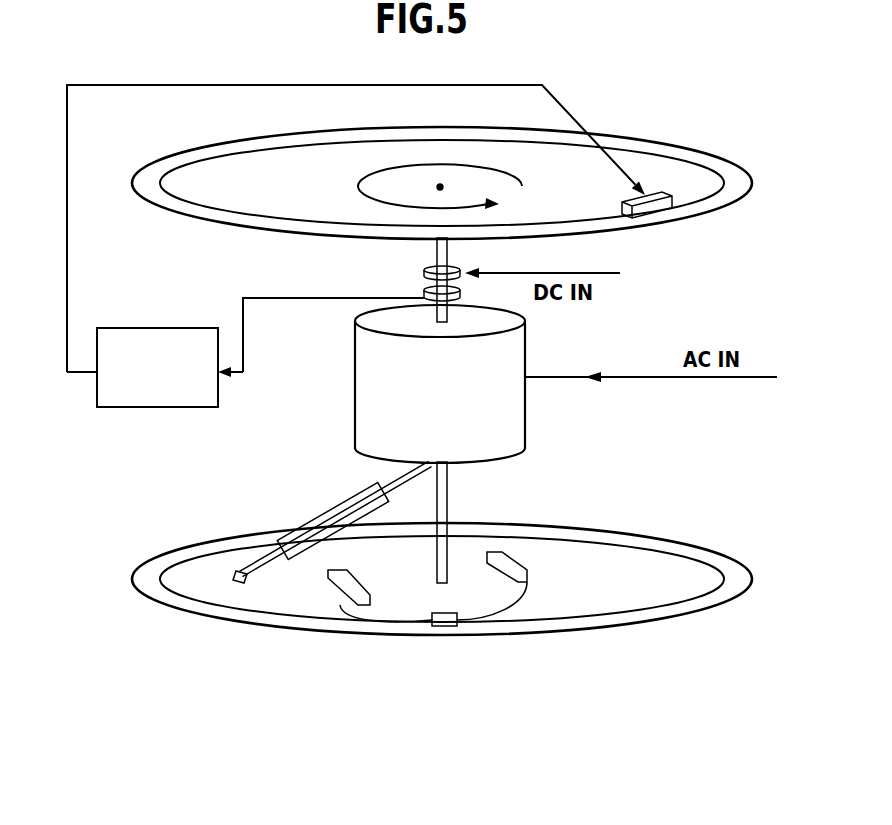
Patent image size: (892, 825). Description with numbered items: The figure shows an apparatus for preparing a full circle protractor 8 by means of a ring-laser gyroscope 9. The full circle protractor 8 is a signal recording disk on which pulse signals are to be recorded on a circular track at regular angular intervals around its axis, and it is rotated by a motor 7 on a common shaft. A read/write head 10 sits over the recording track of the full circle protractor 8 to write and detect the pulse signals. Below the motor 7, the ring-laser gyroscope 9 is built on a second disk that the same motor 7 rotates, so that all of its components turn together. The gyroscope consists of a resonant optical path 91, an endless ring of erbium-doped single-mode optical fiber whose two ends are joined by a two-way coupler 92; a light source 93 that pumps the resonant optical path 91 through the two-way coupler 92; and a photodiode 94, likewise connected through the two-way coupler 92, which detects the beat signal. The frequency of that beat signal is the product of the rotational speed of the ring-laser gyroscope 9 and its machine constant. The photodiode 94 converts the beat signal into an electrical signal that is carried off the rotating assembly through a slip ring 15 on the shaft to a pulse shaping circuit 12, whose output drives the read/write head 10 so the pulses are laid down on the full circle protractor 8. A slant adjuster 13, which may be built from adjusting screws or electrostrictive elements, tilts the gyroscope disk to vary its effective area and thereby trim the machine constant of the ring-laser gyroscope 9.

The motor 7 is at (525, 357).
The full circle protractor 8 is at (193, 147).
The ring-laser gyroscope 9 is at (723, 603).
The read/write head 10 is at (665, 210).
The pulse shaping circuit 12 is at (157, 367).
The slant adjuster 13 is at (297, 558).
The slip ring 15 is at (424, 272).
The resonant optical path 91 is at (617, 615).
The two-way coupler 92 is at (442, 628).
The light source 93 is at (520, 558).
The photodiode 94 is at (343, 593).